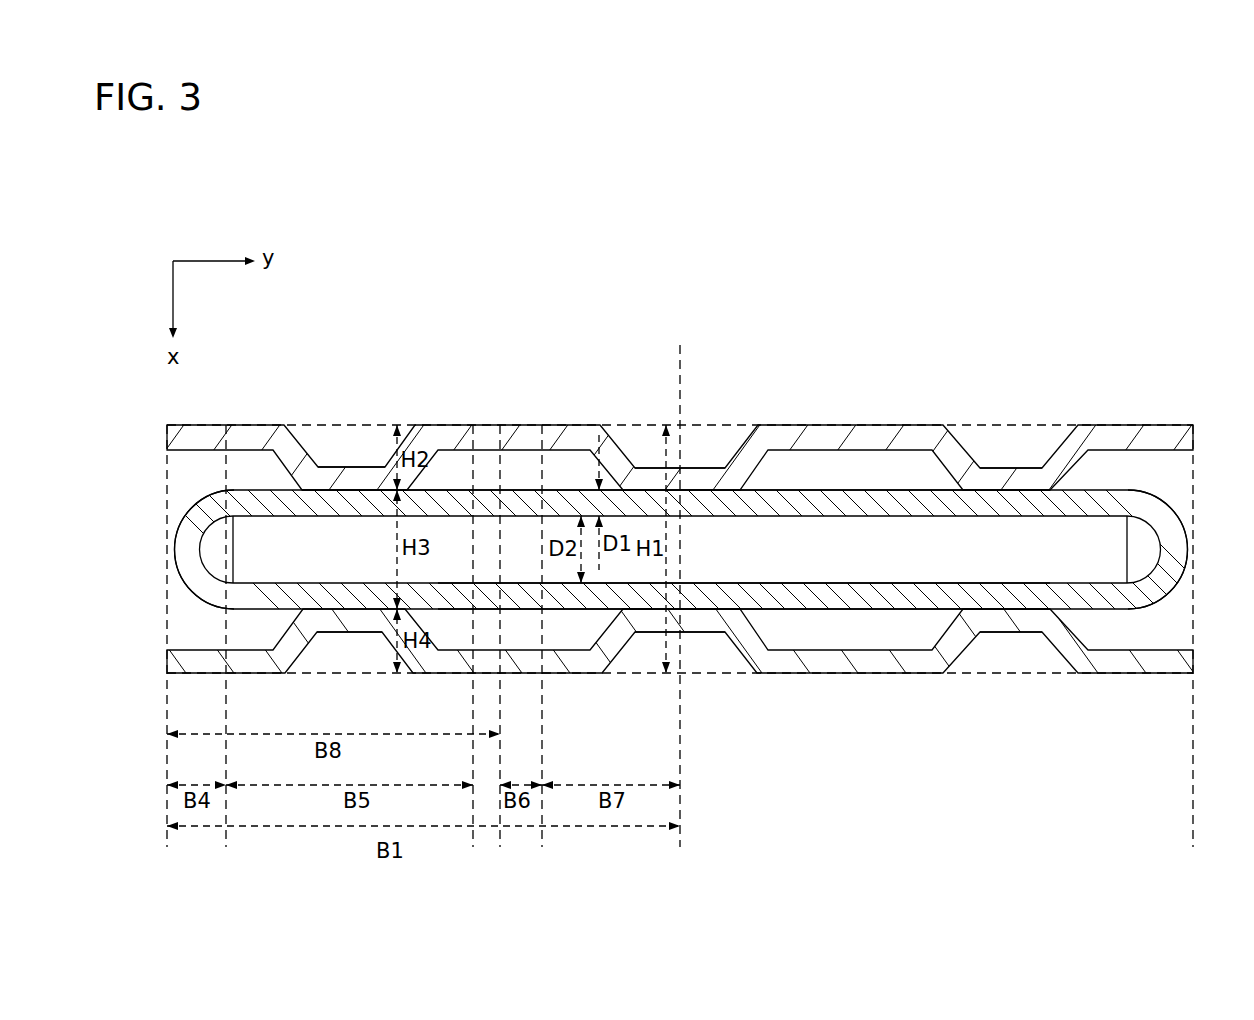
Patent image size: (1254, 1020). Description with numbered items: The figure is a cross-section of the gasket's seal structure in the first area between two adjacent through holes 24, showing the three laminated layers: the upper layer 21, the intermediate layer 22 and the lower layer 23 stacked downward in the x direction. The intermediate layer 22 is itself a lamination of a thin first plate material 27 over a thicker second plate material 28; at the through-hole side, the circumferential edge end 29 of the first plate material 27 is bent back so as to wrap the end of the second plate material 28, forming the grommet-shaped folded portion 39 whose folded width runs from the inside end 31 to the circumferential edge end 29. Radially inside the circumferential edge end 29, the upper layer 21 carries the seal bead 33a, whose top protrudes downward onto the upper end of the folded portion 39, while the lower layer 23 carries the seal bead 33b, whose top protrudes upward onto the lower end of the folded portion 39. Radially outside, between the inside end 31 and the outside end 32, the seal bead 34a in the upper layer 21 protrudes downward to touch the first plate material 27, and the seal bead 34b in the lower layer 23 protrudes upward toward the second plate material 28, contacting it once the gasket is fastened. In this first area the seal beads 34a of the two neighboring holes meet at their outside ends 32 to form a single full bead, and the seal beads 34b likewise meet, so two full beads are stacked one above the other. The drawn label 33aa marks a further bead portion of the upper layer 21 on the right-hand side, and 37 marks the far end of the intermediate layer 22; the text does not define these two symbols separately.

The upper layer 21 is at (167, 432).
The intermediate layer 22 is at (180, 597).
The lower layer 23 is at (167, 614).
The through hole 24 is at (111, 487).
The first plate material 27 is at (457, 490).
The second plate material 28 is at (568, 585).
The circumferential edge end 29 is at (500, 600).
The inside end 31 is at (680, 649).
The outside end 32 is at (685, 609).
The seal bead 33a is at (360, 467).
The contact portion of first plate 33aa is at (1006, 468).
The seal bead 33b is at (348, 632).
The seal bead 34a is at (650, 468).
The seal bead 34b is at (655, 632).
The tube end portion 37 is at (1142, 490).
The folded portion 39 is at (222, 490).